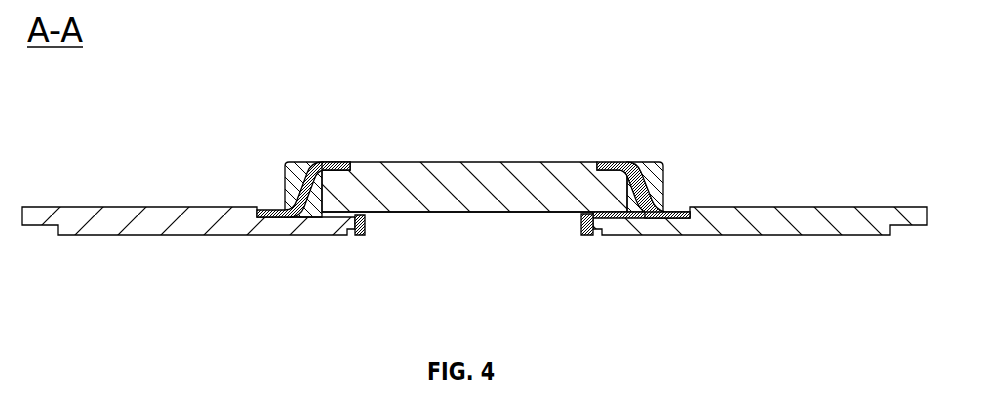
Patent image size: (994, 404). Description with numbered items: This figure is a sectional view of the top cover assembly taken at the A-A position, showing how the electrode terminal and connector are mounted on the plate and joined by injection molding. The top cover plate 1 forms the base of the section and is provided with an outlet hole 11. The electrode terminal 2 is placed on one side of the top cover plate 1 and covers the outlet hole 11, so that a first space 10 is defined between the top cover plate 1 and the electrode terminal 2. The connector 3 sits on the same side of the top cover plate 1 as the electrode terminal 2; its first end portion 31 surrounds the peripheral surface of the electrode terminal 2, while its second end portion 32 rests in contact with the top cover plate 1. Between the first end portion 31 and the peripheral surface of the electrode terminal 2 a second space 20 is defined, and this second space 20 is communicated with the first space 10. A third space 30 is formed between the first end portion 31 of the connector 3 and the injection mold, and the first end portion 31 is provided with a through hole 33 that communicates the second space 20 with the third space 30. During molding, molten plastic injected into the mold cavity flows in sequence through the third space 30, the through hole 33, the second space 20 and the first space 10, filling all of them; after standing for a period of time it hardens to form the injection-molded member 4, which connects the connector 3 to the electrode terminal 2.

The top cover plate 1 is at (772, 207).
The electrode terminal 2 is at (460, 162).
The connector 3 is at (261, 159).
The first end portion 31 is at (310, 162).
The second end portion 32 is at (284, 175).
The injection-molded member 4 is at (312, 162).
The third space 30 is at (636, 148).
The through hole 33 is at (660, 167).
The first space 10 is at (572, 214).
The outlet hole 11 is at (455, 213).
The second space 20 is at (648, 228).